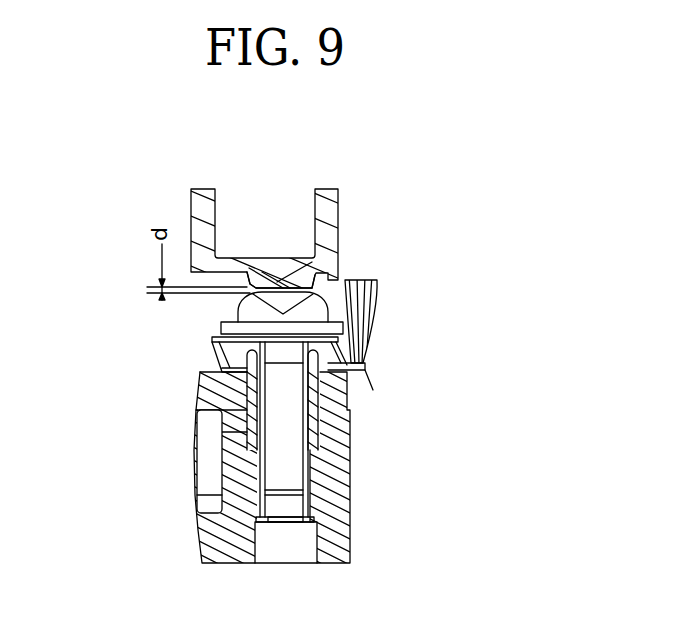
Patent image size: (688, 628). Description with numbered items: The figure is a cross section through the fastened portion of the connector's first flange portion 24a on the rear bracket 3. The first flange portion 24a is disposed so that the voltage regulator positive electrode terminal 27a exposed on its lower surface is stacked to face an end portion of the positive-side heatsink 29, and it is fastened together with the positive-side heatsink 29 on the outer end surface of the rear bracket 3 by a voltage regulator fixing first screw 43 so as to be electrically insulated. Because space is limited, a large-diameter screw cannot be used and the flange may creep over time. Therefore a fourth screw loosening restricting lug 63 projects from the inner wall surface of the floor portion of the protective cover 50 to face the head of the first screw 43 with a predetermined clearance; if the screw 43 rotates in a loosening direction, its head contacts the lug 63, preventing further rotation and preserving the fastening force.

The rear bracket 3 is at (348, 473).
The first flange portion 24a is at (212, 348).
The voltage regulator positive electrode terminal 27a is at (362, 357).
The positive-side heatsink 29 is at (207, 381).
The voltage regulator fixing first screw 43 is at (233, 313).
The protective cover 50 is at (343, 207).
The fourth screw loosening restricting lug 63 is at (282, 281).